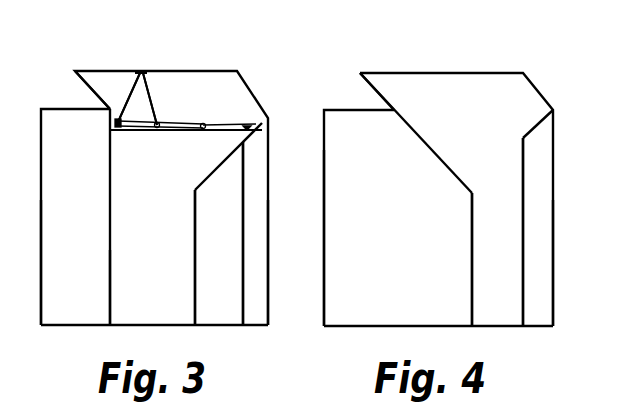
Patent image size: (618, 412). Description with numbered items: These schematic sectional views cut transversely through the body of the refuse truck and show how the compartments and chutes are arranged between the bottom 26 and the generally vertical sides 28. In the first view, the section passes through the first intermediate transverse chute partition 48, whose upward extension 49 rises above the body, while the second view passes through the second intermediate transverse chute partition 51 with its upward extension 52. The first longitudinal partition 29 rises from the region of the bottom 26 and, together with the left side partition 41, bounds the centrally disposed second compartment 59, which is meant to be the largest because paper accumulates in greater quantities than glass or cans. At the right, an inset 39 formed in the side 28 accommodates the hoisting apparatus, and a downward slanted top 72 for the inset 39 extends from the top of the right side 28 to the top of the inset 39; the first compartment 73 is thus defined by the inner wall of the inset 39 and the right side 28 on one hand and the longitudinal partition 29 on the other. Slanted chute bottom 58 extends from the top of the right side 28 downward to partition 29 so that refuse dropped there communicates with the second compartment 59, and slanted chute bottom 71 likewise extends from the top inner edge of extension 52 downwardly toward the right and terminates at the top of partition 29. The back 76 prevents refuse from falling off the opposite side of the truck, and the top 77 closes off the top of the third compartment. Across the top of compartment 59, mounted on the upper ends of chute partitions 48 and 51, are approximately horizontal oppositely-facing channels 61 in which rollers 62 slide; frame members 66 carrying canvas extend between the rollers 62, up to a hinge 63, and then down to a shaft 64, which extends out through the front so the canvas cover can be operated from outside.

In FIG. 3, the bottom 26 is at (142, 325).
In FIG. 4, the bottom 26 is at (370, 327).
In FIG. 3, the sides 28 is at (41, 303).
In FIG. 4, the sides 28 is at (323, 172).
In FIG. 3, the first longitudinal partition 29 is at (196, 282).
In FIG. 4, the first longitudinal partition 29 is at (472, 268).
In FIG. 3, the inset 39 is at (245, 196).
In FIG. 4, the inset 39 is at (524, 172).
In FIG. 3, the left side partition 41 is at (110, 266).
In FIG. 3, the first intermediate transverse chute partition 48 is at (135, 203).
In FIG. 3, the upward extension 49 is at (203, 104).
In FIG. 4, the second intermediate transverse chute partition 51 is at (395, 225).
In FIG. 4, the upward extension 52 is at (450, 105).
In FIG. 3, the slanted chute bottom 58 is at (218, 167).
In FIG. 3, the second compartment 59 is at (140, 252).
In FIG. 3, the channels 61 is at (256, 124).
In FIG. 3, the rollers 62 is at (204, 122).
In FIG. 3, the hinge 63 is at (156, 71).
In FIG. 3, the shaft 64 is at (122, 130).
In FIG. 3, the frame members 66 is at (135, 70).
In FIG. 4, the slanted chute bottom 71 is at (423, 135).
In FIG. 4, the downward slanted top 72 is at (537, 120).
In FIG. 3, the first compartment 73 is at (231, 254).
In FIG. 4, the first compartment 73 is at (482, 267).
In FIG. 3, the back 76 is at (97, 83).
In FIG. 4, the back 76 is at (386, 97).
In FIG. 3, the top 77 is at (71, 108).
In FIG. 4, the top 77 is at (350, 108).